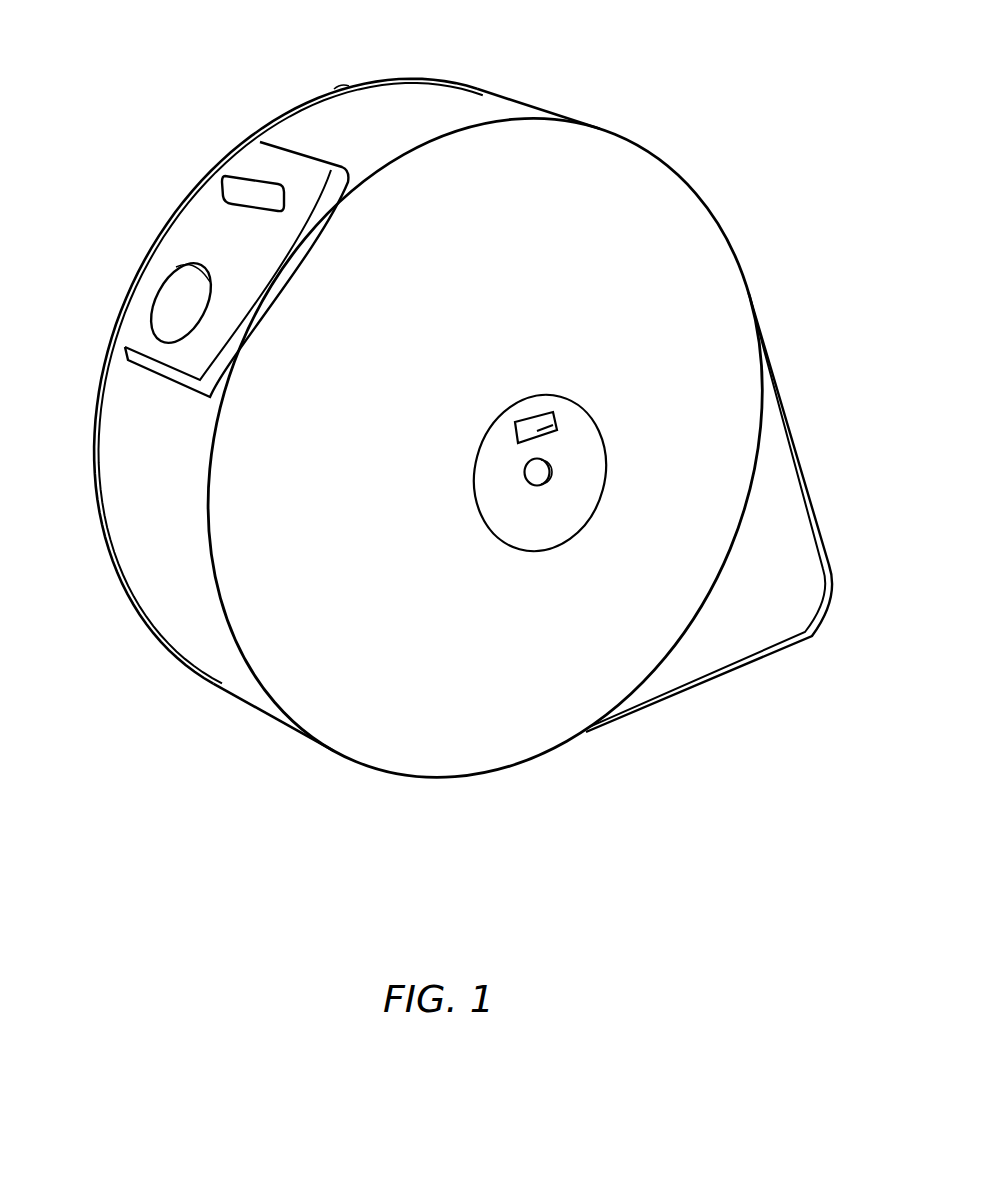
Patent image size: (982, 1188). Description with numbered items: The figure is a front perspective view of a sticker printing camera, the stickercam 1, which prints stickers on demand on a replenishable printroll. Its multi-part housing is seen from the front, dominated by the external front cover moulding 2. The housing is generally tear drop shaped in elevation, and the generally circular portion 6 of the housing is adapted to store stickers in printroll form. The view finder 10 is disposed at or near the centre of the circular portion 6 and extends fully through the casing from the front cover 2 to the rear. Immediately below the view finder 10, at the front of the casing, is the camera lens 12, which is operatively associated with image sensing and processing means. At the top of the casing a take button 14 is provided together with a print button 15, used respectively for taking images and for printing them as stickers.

The stickercam 1 is at (601, 58).
The external front cover moulding 2 is at (712, 270).
The generally circular portion 6 is at (406, 778).
The view finder 10 is at (557, 418).
The camera lens 12 is at (551, 472).
The take button 14 is at (180, 300).
The print button 15 is at (250, 190).